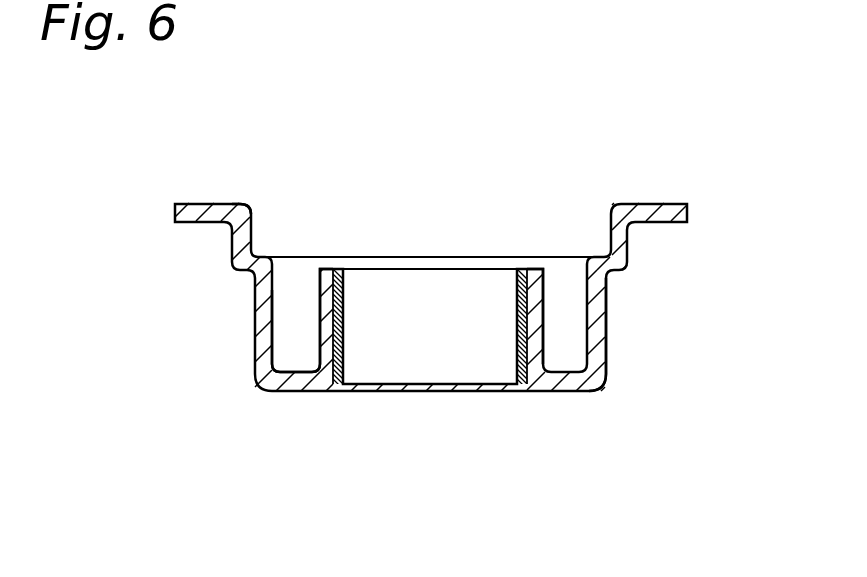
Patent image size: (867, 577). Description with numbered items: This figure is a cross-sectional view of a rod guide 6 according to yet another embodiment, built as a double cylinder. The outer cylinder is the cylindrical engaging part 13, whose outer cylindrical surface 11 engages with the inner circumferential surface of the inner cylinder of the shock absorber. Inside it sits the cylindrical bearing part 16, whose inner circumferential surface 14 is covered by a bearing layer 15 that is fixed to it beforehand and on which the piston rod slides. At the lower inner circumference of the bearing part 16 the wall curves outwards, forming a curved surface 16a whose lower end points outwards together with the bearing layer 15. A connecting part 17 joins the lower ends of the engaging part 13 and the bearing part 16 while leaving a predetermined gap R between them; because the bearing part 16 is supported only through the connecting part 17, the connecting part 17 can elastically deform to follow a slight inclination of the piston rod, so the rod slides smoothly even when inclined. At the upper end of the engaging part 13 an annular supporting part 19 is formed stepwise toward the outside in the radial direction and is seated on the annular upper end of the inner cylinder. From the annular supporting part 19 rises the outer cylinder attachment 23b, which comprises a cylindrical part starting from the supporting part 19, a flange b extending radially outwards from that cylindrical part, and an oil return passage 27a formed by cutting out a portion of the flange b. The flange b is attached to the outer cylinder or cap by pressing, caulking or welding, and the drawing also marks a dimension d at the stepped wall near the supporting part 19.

The rod guide 6 is at (431, 325).
The outer cylinder attachment 23b is at (229, 171).
The flange b is at (281, 168).
The side wall portion d is at (219, 272).
The gap R is at (249, 336).
The bearing layer 15 is at (366, 247).
The inner circumferential surface 14 is at (400, 255).
The cylindrical bearing part 16 is at (513, 243).
The curved surface 16a is at (487, 360).
The connecting part 17 is at (408, 360).
The cylindrical engaging part 13 is at (627, 358).
The annular supporting part 19 is at (628, 196).
The oil return passage 27a is at (691, 171).
The outer cylindrical surface 11 is at (663, 362).